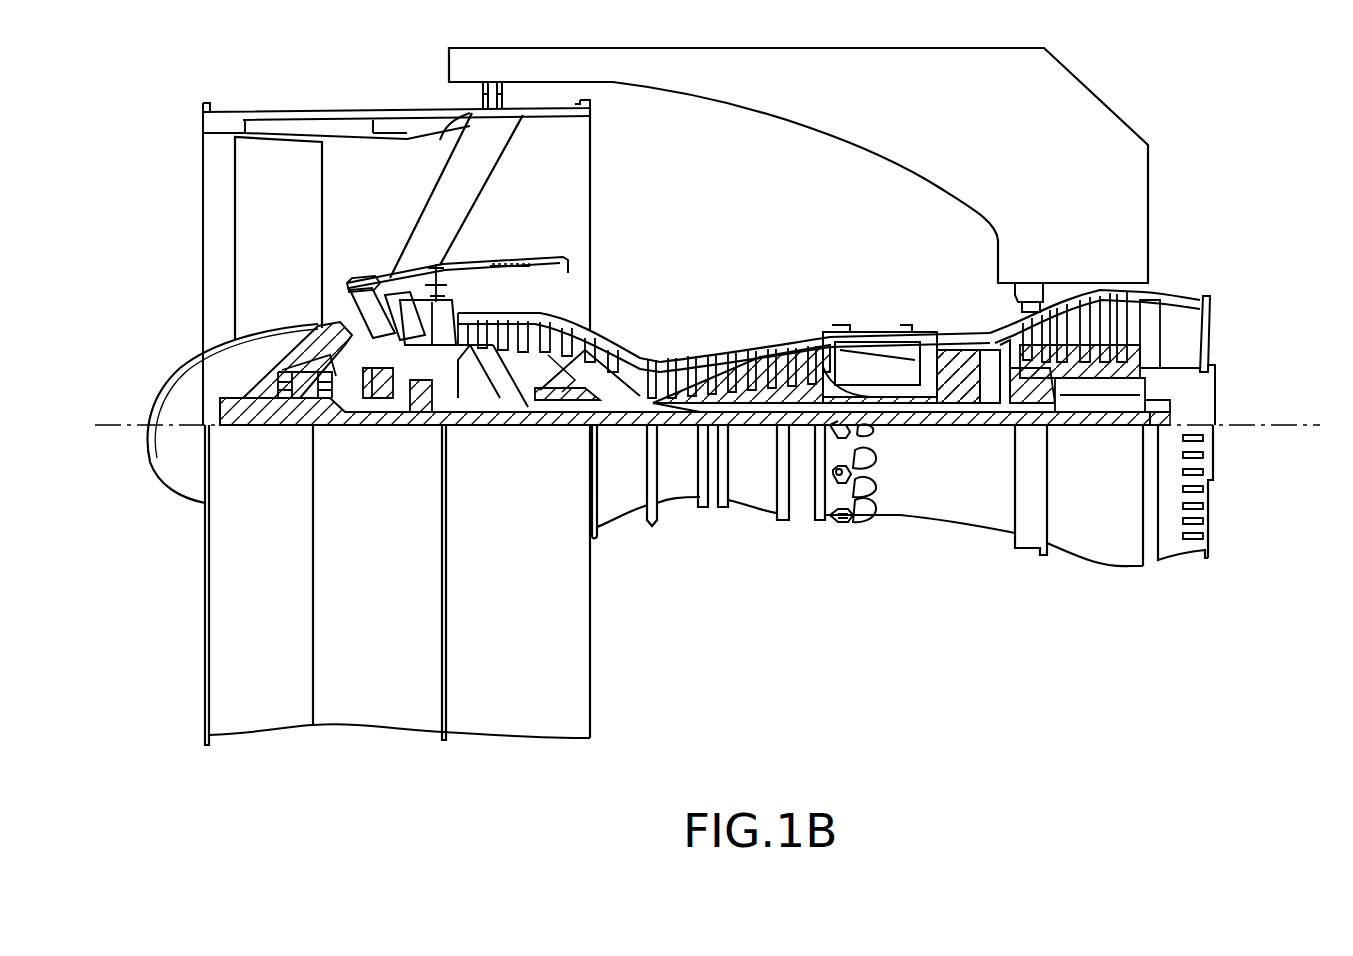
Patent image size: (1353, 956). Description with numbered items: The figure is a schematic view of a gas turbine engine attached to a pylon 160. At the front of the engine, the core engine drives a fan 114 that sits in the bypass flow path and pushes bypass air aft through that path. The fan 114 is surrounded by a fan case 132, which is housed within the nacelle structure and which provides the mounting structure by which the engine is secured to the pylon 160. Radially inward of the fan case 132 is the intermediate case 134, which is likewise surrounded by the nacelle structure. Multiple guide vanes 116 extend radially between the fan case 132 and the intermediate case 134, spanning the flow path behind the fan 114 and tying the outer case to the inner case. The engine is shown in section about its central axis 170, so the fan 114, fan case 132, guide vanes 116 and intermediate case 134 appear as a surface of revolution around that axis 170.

The fan 114 is at (250, 191).
The guide vanes 116 is at (462, 190).
The fan case 132 is at (205, 700).
The intermediate case 134 is at (560, 249).
The pylon 160 is at (948, 87).
The engine central axis 170 is at (1235, 425).